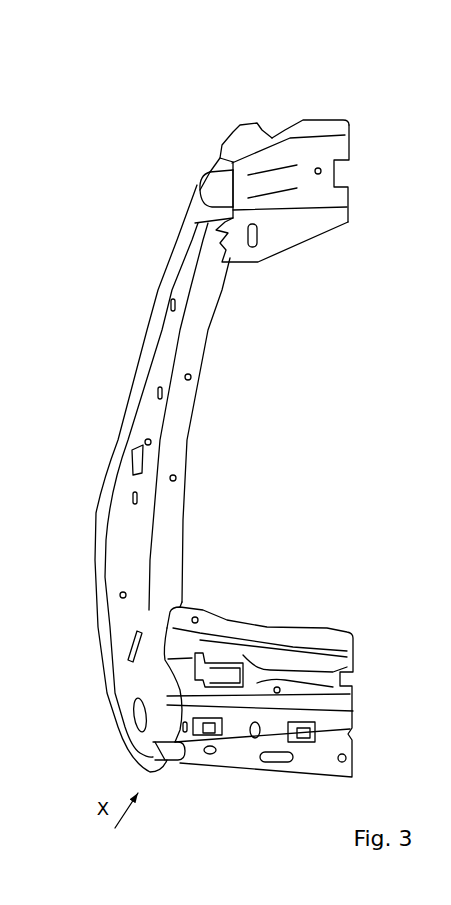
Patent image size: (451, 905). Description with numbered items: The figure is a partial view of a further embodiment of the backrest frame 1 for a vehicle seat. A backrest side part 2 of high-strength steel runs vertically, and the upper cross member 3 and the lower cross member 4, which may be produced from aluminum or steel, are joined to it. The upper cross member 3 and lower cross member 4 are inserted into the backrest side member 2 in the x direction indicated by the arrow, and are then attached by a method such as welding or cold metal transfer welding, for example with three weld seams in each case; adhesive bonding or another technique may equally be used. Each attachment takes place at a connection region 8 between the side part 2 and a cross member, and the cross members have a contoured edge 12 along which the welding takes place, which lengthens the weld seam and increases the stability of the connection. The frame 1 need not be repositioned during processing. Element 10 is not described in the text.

The backrest frame 1 is at (366, 106).
The backrest side part 2 is at (153, 412).
The upper cross member 3 is at (322, 192).
The lower cross member 4 is at (333, 737).
The connection region 8 is at (235, 108).
The flange 10 is at (252, 128).
The contoured edge 12 is at (437, 657).